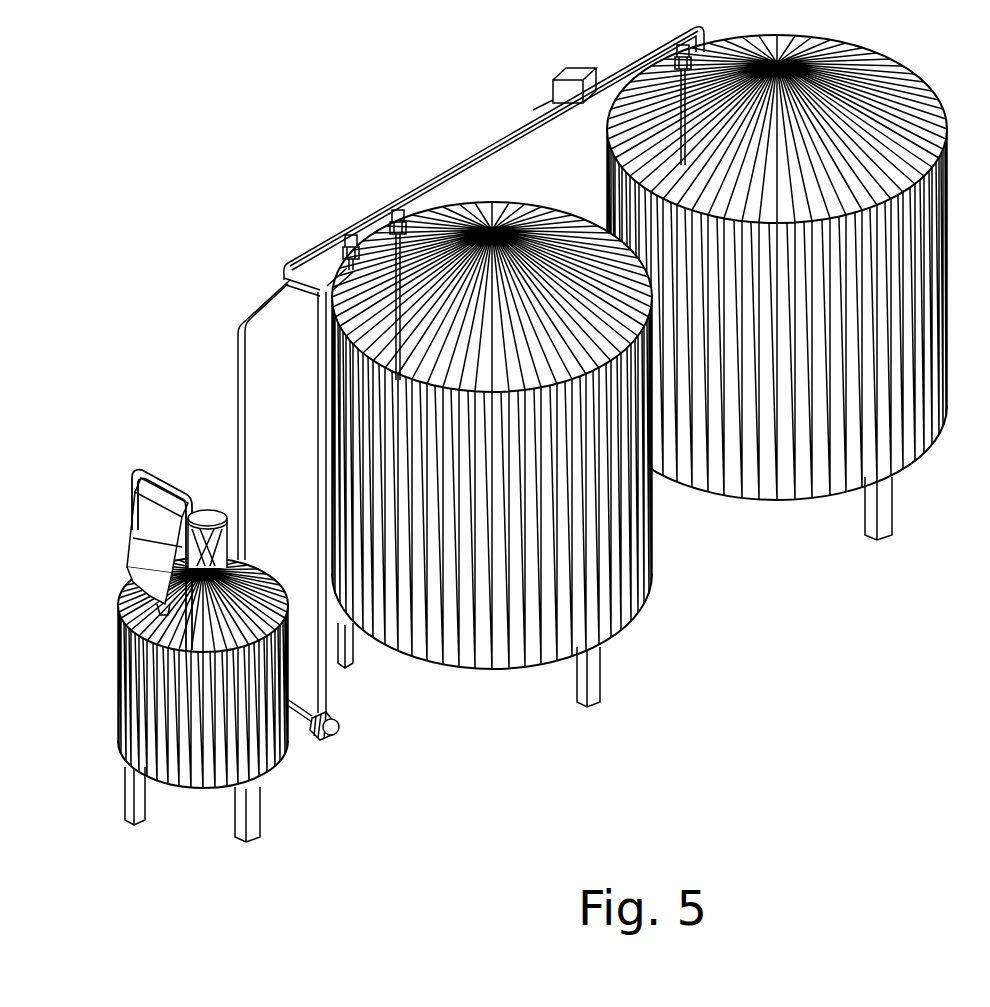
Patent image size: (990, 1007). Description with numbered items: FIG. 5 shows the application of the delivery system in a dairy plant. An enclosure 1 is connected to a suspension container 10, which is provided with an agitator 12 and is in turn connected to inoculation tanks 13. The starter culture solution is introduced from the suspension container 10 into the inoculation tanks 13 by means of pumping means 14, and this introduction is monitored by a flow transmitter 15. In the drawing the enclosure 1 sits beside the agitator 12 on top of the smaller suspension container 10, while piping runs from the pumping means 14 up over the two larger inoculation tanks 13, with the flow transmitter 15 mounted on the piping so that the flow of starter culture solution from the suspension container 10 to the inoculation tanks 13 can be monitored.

The enclosure 1 is at (133, 537).
The suspension container 10 is at (117, 698).
The agitator 12 is at (210, 510).
The inoculation tanks 13 is at (622, 613).
The pumping means 14 is at (331, 737).
The flow transmitter 15 is at (553, 72).